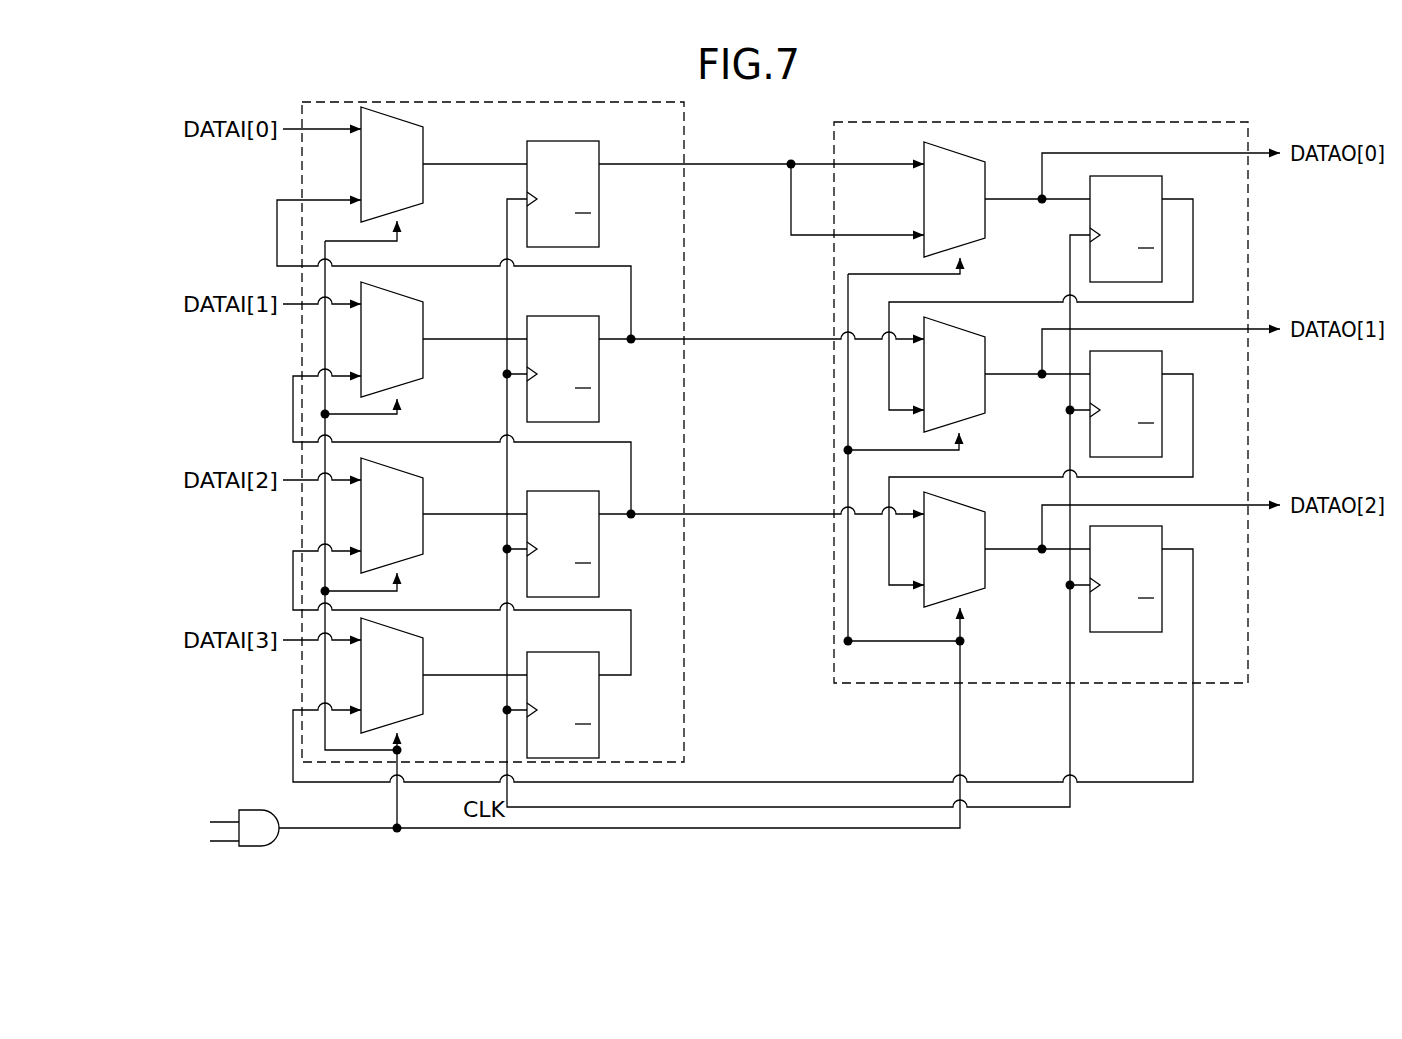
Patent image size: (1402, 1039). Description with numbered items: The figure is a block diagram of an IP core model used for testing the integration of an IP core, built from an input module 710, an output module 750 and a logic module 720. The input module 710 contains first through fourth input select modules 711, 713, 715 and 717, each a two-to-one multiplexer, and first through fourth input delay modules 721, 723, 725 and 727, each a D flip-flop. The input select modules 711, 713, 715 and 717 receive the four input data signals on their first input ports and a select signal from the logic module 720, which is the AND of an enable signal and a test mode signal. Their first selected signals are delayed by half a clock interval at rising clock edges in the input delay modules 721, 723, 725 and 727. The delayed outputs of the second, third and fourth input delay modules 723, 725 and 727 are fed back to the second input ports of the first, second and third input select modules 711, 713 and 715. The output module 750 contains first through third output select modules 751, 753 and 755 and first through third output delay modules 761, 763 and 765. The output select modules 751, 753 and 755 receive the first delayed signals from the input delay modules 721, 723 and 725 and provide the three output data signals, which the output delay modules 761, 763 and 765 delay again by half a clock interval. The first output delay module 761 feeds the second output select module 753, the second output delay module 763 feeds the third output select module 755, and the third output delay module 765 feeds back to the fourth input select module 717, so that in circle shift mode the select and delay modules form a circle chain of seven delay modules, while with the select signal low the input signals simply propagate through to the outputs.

The input module 710 is at (684, 267).
The first input select module 711 is at (423, 133).
The second input select module 713 is at (423, 308).
The third input select module 715 is at (423, 484).
The fourth input select module 717 is at (423, 644).
The logic module 720 is at (253, 811).
The first input delay module 721 is at (599, 190).
The second input delay module 723 is at (599, 365).
The third input delay module 725 is at (599, 540).
The fourth input delay module 727 is at (599, 700).
The output module 750 is at (1248, 268).
The first output select module 751 is at (985, 232).
The second output select module 753 is at (985, 401).
The third output select module 755 is at (985, 578).
The first output delay module 761 is at (1162, 187).
The second output delay module 763 is at (1162, 362).
The third output delay module 765 is at (1162, 537).